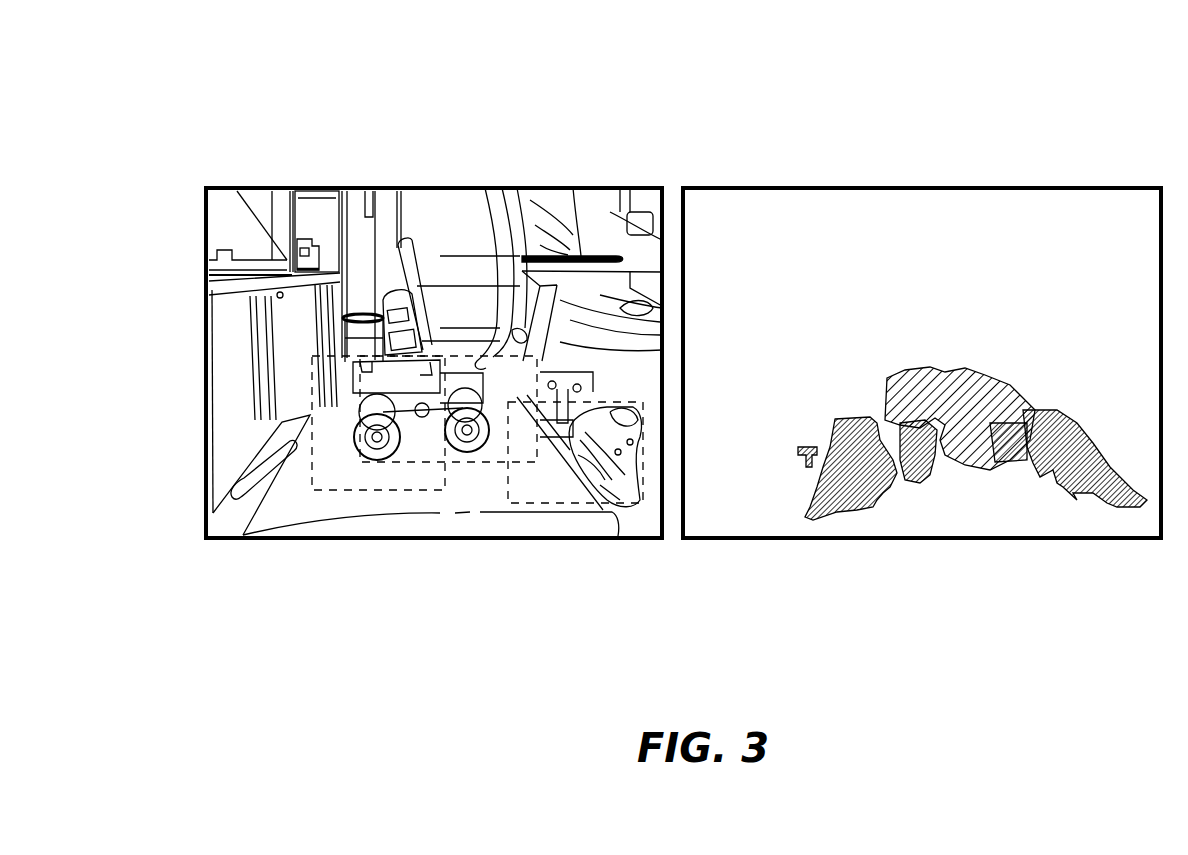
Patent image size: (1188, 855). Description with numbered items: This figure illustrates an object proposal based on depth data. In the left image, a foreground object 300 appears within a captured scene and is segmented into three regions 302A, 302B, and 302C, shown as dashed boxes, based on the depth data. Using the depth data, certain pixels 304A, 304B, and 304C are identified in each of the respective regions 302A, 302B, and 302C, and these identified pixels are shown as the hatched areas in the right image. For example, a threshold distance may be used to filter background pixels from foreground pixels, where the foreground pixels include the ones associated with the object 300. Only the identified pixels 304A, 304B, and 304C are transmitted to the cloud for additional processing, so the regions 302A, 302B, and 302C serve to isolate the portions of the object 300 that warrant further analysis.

The foreground object 300 is at (480, 188).
The first region 302A is at (347, 353).
The second region 302B is at (467, 348).
The third region 302C is at (507, 497).
The identified pixels 304A is at (860, 420).
The identified pixels 304B is at (1000, 390).
The identified pixels 304C is at (1065, 410).